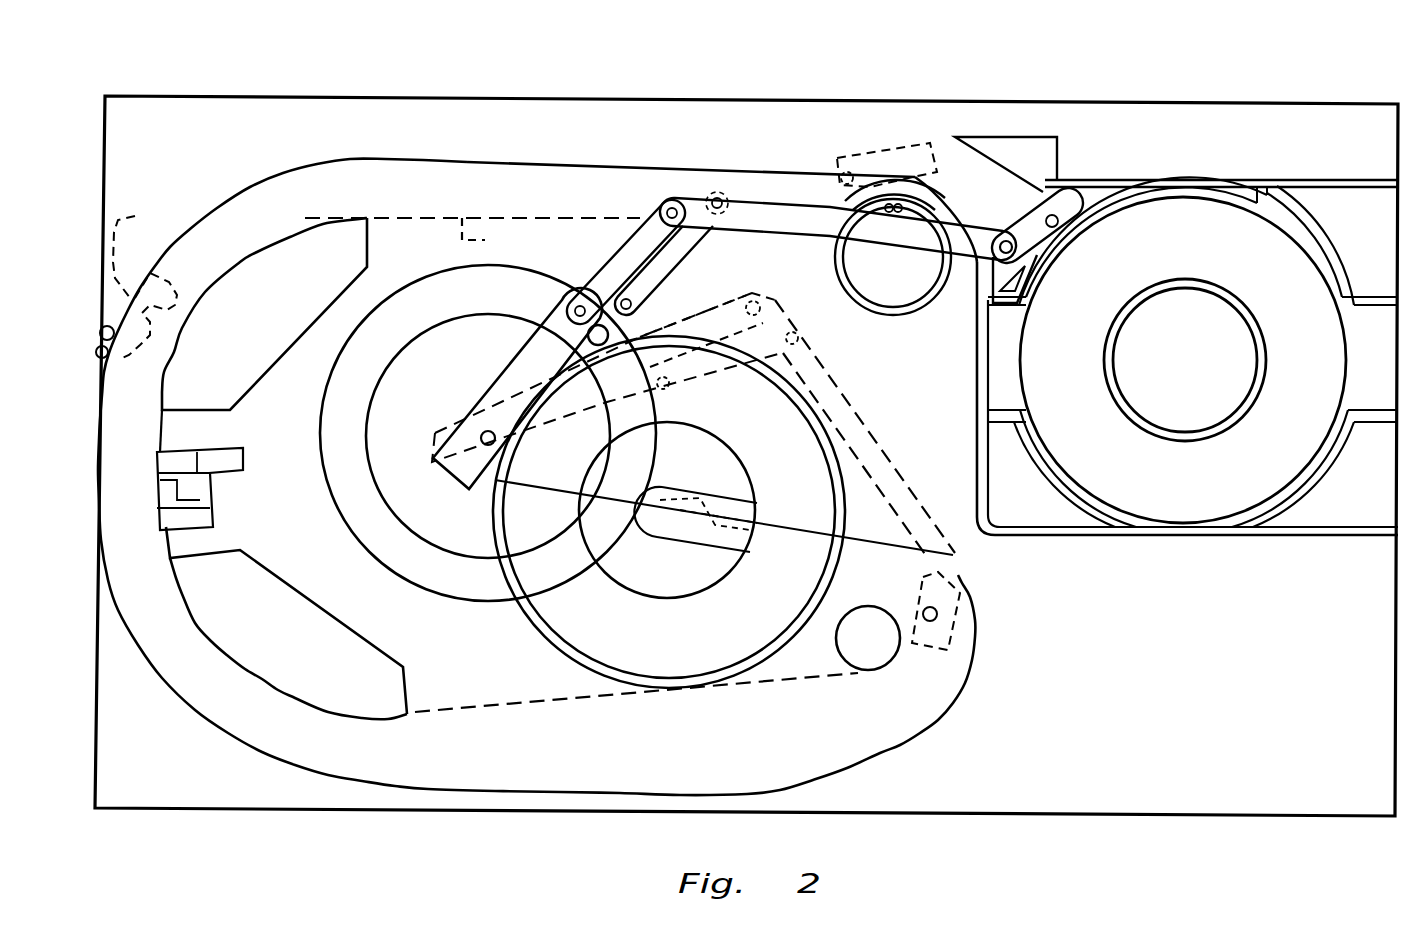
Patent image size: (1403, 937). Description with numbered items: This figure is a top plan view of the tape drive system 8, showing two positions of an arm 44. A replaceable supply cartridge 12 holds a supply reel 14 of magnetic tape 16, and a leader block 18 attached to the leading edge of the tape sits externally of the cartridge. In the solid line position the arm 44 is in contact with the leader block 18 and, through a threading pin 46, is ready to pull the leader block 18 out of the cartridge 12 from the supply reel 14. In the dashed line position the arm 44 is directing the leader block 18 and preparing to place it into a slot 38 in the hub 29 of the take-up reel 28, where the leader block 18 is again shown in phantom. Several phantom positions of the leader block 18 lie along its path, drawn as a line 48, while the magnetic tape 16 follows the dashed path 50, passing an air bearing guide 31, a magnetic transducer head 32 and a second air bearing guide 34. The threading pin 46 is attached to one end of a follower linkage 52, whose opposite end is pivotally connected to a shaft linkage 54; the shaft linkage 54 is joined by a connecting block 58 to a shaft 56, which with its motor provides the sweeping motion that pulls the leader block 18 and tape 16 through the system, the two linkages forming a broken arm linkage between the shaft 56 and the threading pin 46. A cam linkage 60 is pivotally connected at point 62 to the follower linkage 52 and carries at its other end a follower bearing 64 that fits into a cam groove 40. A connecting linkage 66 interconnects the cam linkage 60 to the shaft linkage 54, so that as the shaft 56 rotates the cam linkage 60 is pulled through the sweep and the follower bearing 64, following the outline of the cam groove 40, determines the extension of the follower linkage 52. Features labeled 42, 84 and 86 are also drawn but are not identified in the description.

The tape drive system 8 is at (962, 44).
The supply cartridge 12 is at (1322, 176).
The supply reel 14 is at (1294, 346).
The magnetic tape 16 is at (1098, 212).
The leader block 18 is at (897, 140).
The take-up reel 28 is at (772, 614).
The hub 29 is at (660, 570).
The air bearing guide 31 is at (370, 240).
The magnetic transducer head 32 is at (200, 493).
The second air bearing guide 34 is at (368, 672).
The slot 38 is at (700, 487).
The cam groove 40 is at (420, 540).
The outer drum 42 is at (405, 576).
The arm 44 is at (690, 186).
The threading pin 46 is at (1003, 240).
The path of leader block 48 is at (462, 162).
The path of magnetic tape 50 is at (473, 230).
The follower linkage 52 is at (822, 228).
The shaft linkage 54 is at (628, 245).
The shaft 56 is at (482, 428).
The connecting block 58 is at (440, 468).
The cam linkage 60 is at (700, 235).
The pivot point 62 is at (722, 198).
The follower bearing 64 is at (552, 322).
The connecting linkage 66 is at (683, 282).
The guide roller 84 is at (968, 285).
The guide plate 86 is at (1050, 165).